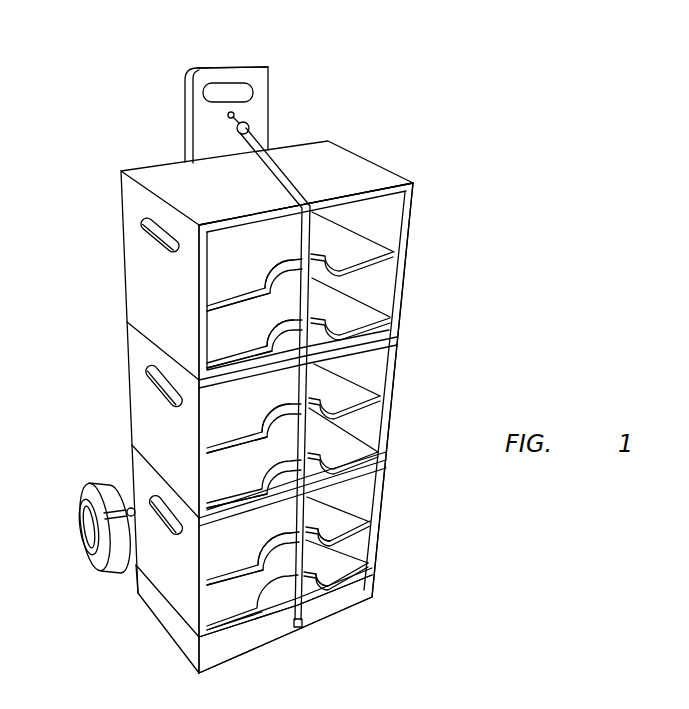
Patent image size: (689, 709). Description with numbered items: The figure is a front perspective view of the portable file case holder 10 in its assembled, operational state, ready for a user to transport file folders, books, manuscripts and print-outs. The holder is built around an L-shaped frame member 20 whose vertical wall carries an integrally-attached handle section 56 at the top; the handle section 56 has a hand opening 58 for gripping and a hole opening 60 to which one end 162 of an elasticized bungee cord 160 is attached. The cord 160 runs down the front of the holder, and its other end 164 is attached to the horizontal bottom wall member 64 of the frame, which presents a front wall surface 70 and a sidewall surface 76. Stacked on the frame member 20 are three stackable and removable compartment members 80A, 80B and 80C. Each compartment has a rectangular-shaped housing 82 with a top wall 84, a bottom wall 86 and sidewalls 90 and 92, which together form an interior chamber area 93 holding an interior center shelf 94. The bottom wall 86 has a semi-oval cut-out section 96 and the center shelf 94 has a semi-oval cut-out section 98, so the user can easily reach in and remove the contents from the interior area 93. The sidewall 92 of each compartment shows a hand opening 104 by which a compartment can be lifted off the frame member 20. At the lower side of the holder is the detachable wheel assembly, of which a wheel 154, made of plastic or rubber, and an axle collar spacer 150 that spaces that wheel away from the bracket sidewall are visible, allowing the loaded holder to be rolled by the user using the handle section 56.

The portable file case holder 10 is at (420, 152).
The frame member 20 is at (240, 62).
The handle section 56 is at (262, 68).
The hand opening 58 is at (254, 87).
The hole opening 60 is at (228, 115).
The horizontal bottom wall member 64 is at (190, 668).
The front wall surface 70 is at (237, 647).
The sidewall surface 76 is at (176, 631).
The compartment member 80A is at (358, 150).
The compartment member 80B is at (401, 352).
The compartment member 80C is at (383, 540).
The rectangular-shaped housing 82 is at (143, 276).
The top wall 84 is at (262, 192).
The bottom wall 86 is at (252, 369).
The sidewall 90 is at (397, 210).
The sidewall 92 is at (172, 321).
The interior chamber area 93 is at (345, 233).
The interior center shelf 94 is at (237, 277).
The semi-oval cut-out section 96 is at (276, 265).
The semi-oval cut-out section 98 is at (290, 322).
The hand opening 104 is at (148, 226).
The axle collar spacer 150 is at (126, 500).
The wheel 154 is at (92, 493).
The elasticized (bungee) cord 160 is at (295, 180).
The one end of bungee cord 162 is at (250, 122).
The other end of bungee cord 164 is at (303, 626).